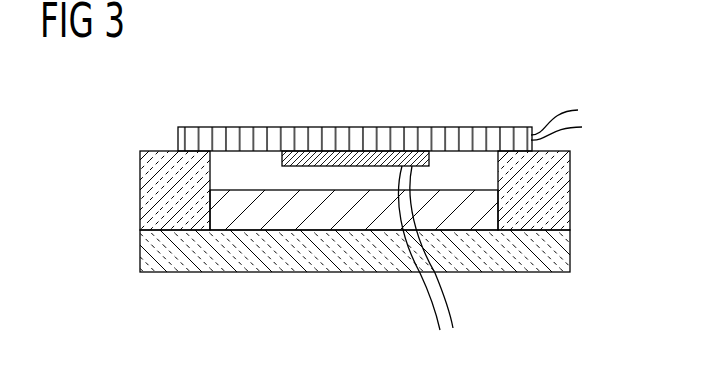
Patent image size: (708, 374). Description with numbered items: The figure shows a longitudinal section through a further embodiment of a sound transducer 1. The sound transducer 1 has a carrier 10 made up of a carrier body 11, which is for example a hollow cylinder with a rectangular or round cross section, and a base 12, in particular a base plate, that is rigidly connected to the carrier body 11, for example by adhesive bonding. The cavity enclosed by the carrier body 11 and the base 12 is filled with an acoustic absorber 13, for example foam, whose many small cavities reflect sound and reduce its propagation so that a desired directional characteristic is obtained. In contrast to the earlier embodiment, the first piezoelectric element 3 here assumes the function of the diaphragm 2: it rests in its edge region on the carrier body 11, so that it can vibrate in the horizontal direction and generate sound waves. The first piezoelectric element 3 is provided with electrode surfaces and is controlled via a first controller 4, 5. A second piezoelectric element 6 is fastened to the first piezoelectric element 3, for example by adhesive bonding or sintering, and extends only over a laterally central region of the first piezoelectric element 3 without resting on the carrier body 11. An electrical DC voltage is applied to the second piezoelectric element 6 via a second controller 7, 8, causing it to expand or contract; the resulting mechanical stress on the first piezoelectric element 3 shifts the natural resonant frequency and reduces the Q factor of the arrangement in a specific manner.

The sound transducer 1 is at (517, 79).
The diaphragm 2 is at (218, 133).
The first piezoelectric element 3 is at (258, 133).
The first controller 4 is at (562, 145).
The first controller 5 is at (560, 106).
The second piezoelectric element 6 is at (362, 157).
The second controller 7 is at (421, 264).
The second controller 8 is at (441, 260).
The carrier 10 is at (80, 152).
The carrier body 11 is at (140, 182).
The base 12 is at (140, 247).
The acoustic absorber 13 is at (343, 216).